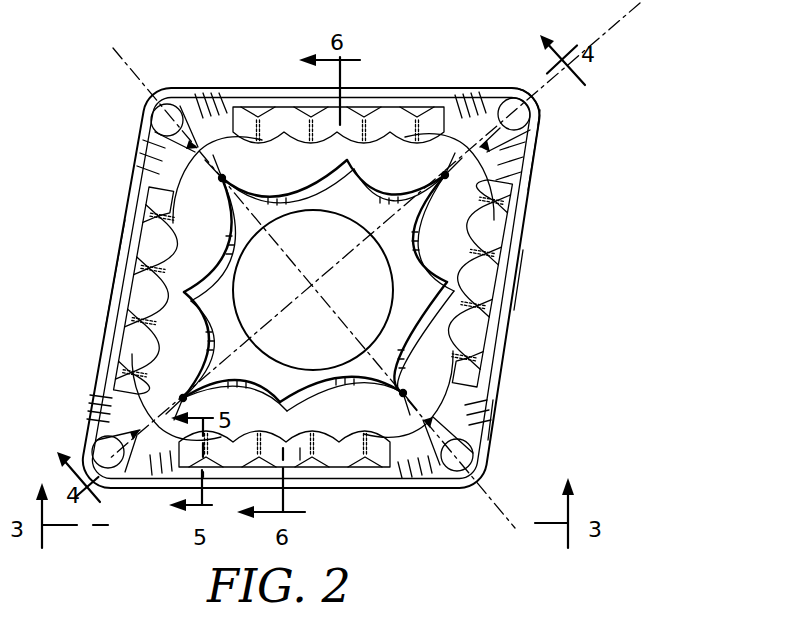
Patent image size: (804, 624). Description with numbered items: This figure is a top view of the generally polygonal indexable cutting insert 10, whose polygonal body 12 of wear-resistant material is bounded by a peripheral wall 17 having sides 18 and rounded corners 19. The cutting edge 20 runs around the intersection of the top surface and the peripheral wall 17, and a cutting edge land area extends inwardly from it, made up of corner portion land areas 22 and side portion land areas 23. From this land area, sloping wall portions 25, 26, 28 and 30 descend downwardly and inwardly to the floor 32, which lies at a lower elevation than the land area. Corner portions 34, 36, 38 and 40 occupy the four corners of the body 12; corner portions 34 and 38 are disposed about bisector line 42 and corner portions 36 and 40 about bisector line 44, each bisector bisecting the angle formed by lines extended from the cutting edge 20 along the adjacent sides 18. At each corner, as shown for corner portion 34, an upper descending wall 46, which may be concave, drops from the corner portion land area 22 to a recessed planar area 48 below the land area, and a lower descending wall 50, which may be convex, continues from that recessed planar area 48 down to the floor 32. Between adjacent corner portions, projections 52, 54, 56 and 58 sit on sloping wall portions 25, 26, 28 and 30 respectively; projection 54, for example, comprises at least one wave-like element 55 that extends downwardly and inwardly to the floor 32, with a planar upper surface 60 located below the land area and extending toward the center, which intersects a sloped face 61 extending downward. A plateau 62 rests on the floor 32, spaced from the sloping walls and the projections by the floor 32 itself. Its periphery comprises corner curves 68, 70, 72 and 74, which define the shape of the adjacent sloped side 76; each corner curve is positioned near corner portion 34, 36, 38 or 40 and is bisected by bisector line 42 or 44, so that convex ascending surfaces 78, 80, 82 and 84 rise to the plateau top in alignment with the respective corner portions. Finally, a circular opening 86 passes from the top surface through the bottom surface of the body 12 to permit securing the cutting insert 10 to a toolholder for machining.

The cutting insert 10 is at (34, 279).
The polygonal body 12 is at (103, 325).
The peripheral wall 17 is at (535, 185).
The sides 18 is at (528, 291).
The rounded corners 19 is at (552, 106).
The cutting edge 20 is at (262, 88).
The corner portion land areas 22 is at (537, 130).
The side portion land areas 23 is at (403, 90).
The sloping wall portion 25 is at (490, 412).
The sloping wall portion 26 is at (167, 437).
The sloping wall portion 28 is at (197, 183).
The sloping wall portion 30 is at (466, 100).
The floor 32 is at (380, 146).
The corner portion 34 is at (540, 117).
The corner portion 36 is at (467, 480).
The corner portion 38 is at (100, 433).
The corner portion 40 is at (150, 110).
The bisector line 42 is at (634, 10).
The bisector line 44 is at (497, 495).
The upper descending wall 46 is at (525, 100).
The recessed planar area 48 is at (507, 110).
The lower descending wall 50 is at (482, 143).
The projection 52 is at (472, 332).
The projection 54 is at (220, 450).
The wave-like element 55 is at (310, 452).
The projection 56 is at (153, 238).
The projection 58 is at (290, 122).
The planar upper surface 60 is at (307, 457).
The sloped face 61 is at (307, 450).
The plateau 62 is at (256, 214).
The corner curve 68 is at (432, 173).
The corner curve 70 is at (400, 397).
The corner curve 72 is at (187, 377).
The corner curve 74 is at (215, 190).
The sloped side 76 is at (417, 307).
The convex ascending surface 78 is at (455, 180).
The convex ascending surface 80 is at (404, 400).
The convex ascending surface 82 is at (180, 399).
The convex ascending surface 84 is at (222, 175).
The circular opening 86 is at (253, 310).